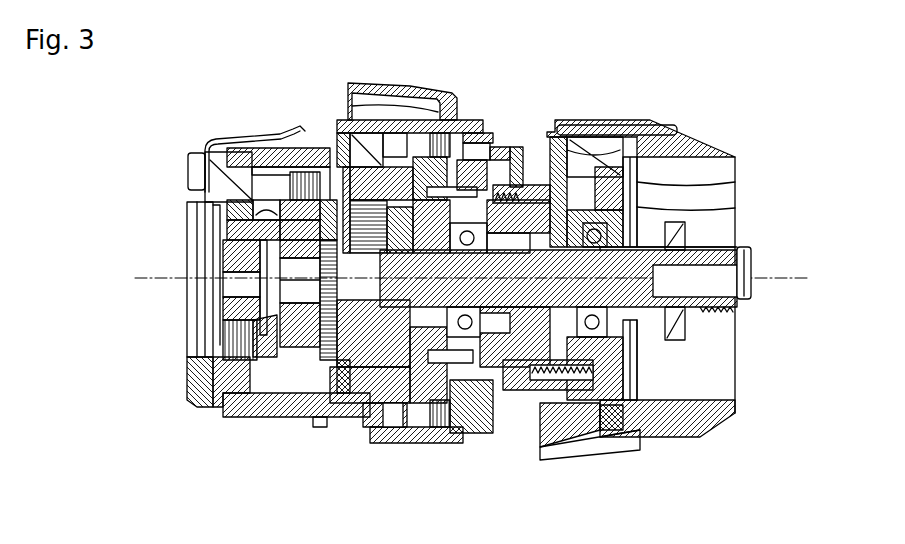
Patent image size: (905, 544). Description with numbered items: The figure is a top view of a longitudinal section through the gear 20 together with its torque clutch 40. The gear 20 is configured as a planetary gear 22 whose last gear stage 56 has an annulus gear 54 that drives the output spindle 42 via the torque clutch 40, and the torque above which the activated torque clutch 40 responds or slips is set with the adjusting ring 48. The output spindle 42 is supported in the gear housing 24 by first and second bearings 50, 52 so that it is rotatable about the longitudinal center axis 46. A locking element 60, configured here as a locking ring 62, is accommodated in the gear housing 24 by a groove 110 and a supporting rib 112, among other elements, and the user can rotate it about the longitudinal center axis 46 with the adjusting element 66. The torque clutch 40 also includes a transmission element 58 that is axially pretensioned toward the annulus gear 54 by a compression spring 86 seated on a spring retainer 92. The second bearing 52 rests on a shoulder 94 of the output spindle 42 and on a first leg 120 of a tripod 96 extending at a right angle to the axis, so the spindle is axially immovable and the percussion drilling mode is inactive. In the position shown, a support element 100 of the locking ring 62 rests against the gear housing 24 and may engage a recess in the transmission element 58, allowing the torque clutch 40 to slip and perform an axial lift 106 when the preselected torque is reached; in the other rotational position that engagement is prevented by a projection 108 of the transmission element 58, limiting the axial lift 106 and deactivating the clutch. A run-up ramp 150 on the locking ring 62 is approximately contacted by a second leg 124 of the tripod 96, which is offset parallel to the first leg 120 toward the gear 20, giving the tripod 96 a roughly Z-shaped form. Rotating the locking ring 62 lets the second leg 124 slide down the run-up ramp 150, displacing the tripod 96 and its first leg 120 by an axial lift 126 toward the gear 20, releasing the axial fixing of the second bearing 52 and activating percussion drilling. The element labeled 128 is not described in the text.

The gear 20 is at (300, 332).
The planetary gear 22 is at (413, 447).
The gear housing 24 is at (283, 132).
The torque clutch 40 is at (500, 128).
The output spindle 42 is at (640, 323).
The longitudinal center axis 46 is at (142, 277).
The adjusting ring 48 is at (712, 147).
The first bearing 50 is at (230, 232).
The second bearing 52 is at (667, 440).
The annulus gear 54 is at (250, 377).
The last gear stage 56 is at (340, 140).
The transmission element 58 is at (427, 120).
The locking element 60 is at (487, 130).
The locking ring 62 is at (498, 116).
The adjusting element 66 is at (358, 83).
The compression spring 86 is at (603, 130).
The spring retainer 92 is at (600, 120).
The shoulder 94 is at (740, 246).
The tripod 96 is at (740, 184).
The support element 100 is at (477, 435).
The axial lift 106 is at (423, 440).
The projection 108 is at (402, 133).
The groove 110 is at (567, 447).
The supporting rib 112 is at (513, 420).
The first leg 120 is at (740, 208).
The second leg 124 is at (533, 150).
The axial lift 126 is at (745, 306).
The block 128 is at (628, 440).
The run-up ramp 150 is at (567, 147).